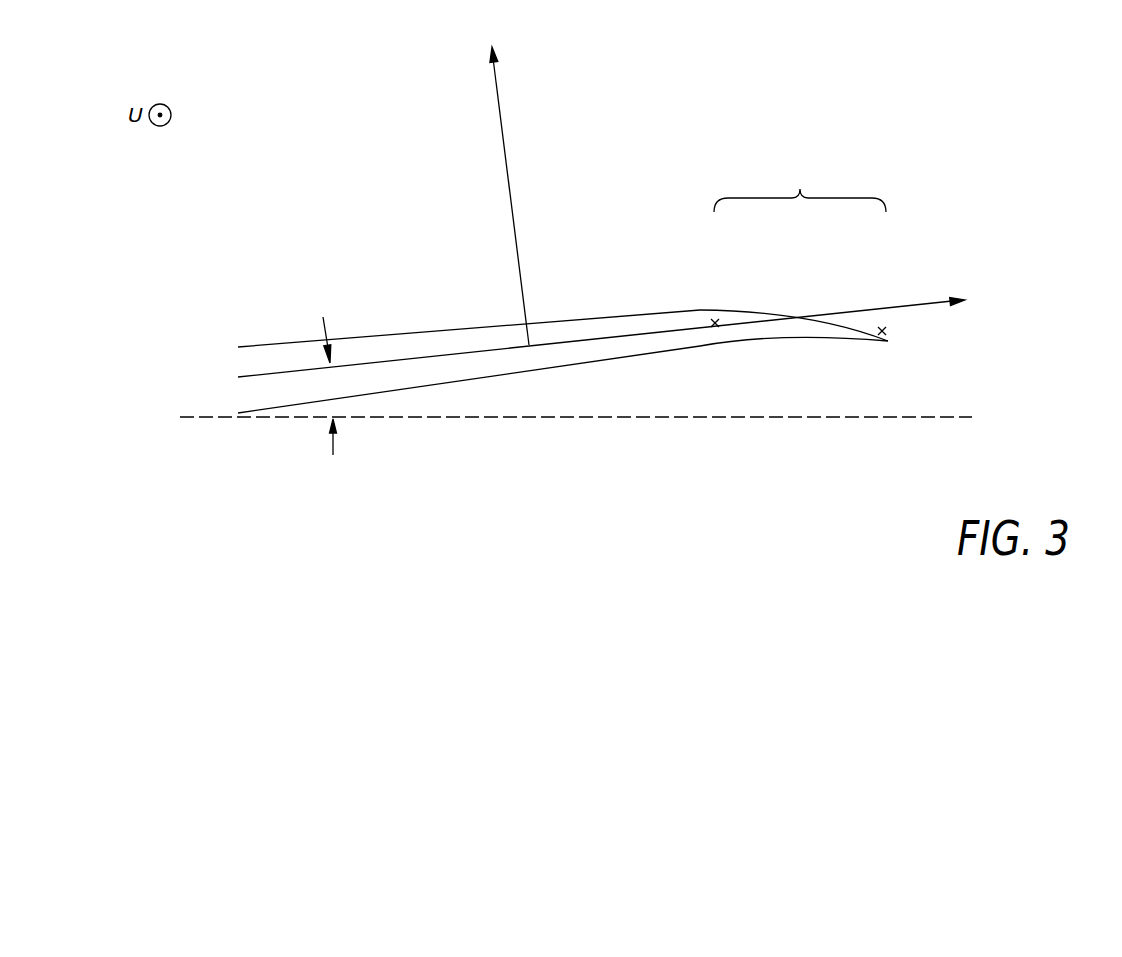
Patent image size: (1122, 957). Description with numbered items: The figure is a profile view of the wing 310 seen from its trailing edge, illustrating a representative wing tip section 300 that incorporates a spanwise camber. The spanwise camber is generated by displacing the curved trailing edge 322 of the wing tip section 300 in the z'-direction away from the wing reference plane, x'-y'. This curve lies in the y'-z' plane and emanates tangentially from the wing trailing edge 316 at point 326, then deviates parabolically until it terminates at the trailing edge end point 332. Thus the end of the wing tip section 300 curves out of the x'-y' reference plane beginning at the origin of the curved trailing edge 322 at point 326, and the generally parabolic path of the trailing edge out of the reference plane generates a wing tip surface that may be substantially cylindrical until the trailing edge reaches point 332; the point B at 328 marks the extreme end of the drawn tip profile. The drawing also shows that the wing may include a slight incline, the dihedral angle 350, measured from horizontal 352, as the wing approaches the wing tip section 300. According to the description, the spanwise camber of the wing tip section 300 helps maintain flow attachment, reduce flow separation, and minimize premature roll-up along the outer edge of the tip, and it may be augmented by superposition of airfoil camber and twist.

The wing tip section 300 is at (800, 186).
The wing 310 is at (419, 262).
The wing trailing edge 316 is at (278, 372).
The curved trailing edge 322 is at (783, 323).
The point 326 is at (697, 366).
The point B end of surface 328 is at (890, 342).
The trailing edge end point 332 is at (887, 318).
The dihedral angle 350 is at (389, 403).
The horizontal 352 is at (755, 417).